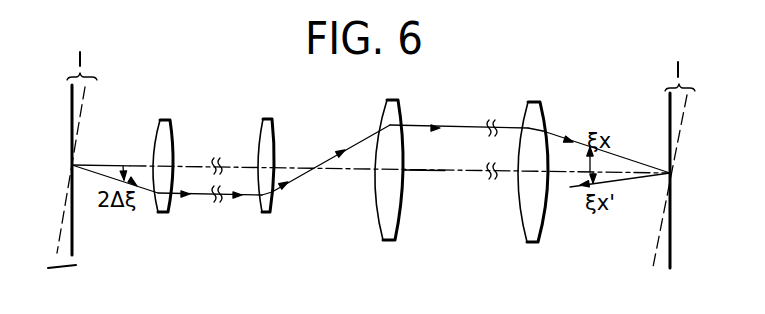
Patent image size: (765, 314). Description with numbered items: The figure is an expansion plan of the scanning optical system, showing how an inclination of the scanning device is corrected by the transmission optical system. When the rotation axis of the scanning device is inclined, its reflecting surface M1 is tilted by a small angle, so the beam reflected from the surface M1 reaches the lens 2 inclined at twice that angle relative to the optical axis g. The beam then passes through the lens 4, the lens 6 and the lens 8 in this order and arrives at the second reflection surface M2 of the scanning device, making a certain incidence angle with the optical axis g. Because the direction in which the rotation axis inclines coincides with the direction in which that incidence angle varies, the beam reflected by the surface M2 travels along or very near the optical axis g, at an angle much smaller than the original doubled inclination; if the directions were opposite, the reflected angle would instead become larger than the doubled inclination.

The lens 2 is at (165, 213).
The lens 4 is at (266, 213).
The lens 6 is at (388, 242).
The lens 8 is at (533, 243).
The optical axis g is at (445, 171).
The reflecting surface M1 is at (74, 236).
The reflection surface M2 is at (672, 213).